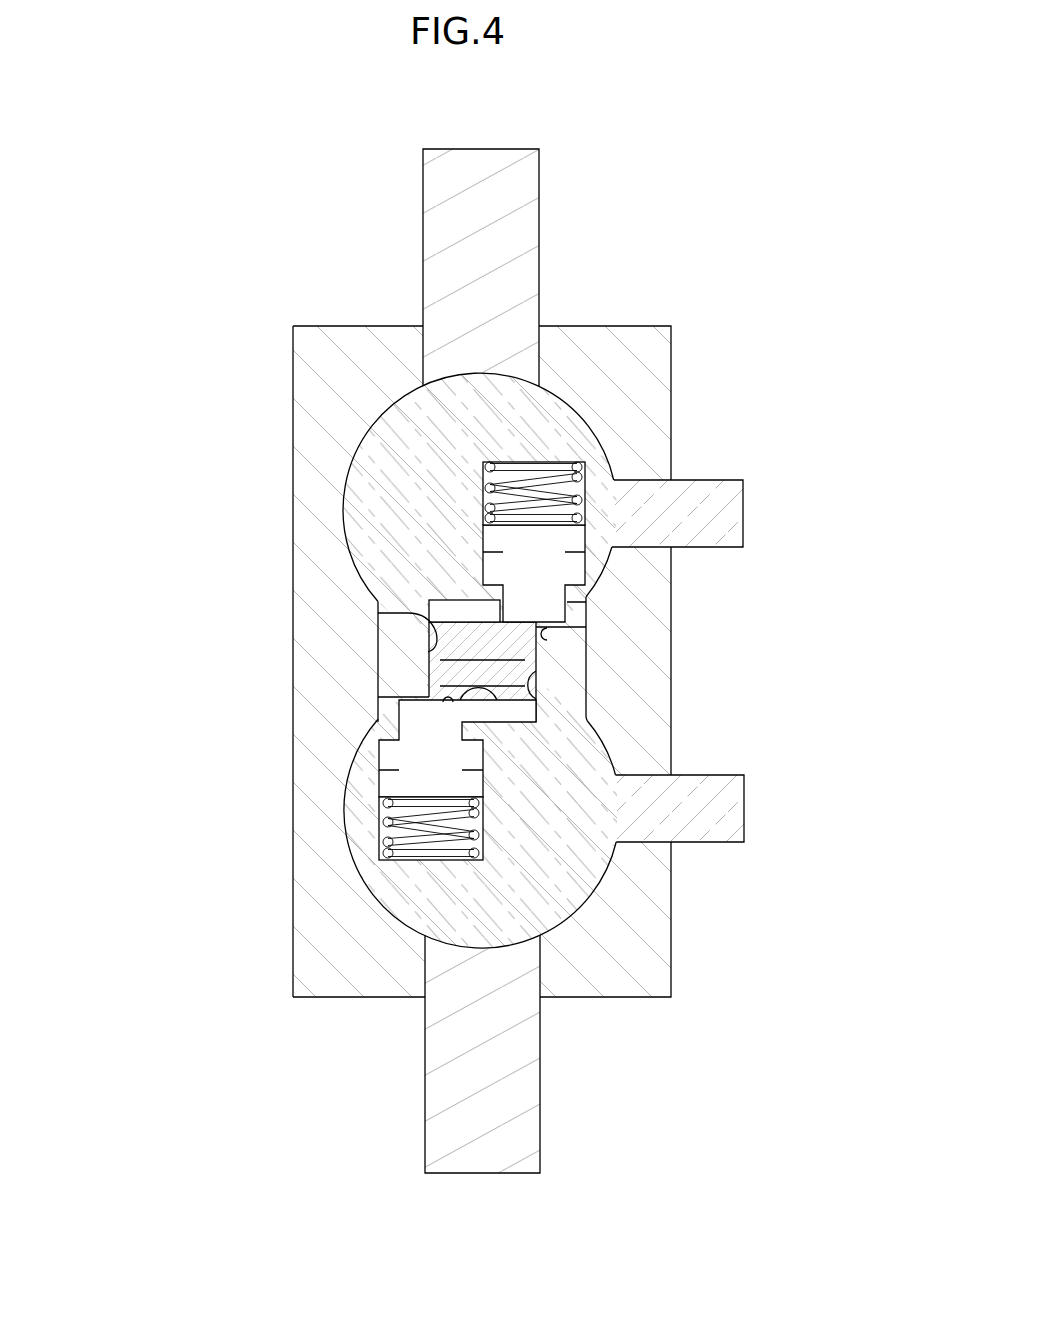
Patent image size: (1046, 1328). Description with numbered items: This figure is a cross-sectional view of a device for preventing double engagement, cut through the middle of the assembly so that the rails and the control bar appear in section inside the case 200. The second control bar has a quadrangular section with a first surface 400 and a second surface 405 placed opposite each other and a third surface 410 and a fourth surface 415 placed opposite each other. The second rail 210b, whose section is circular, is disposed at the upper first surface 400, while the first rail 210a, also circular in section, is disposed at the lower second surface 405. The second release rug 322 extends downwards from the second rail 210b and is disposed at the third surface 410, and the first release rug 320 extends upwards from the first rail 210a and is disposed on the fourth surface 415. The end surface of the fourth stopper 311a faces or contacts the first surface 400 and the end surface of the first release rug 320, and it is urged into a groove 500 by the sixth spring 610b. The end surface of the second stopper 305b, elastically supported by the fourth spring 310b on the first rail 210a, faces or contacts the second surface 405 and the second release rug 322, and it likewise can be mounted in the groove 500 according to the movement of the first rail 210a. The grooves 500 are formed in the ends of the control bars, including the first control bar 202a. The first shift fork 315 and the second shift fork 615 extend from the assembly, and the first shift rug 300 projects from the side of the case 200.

The case 200 is at (620, 343).
The first control bar 202a is at (465, 673).
The first rail 210a is at (400, 432).
The second rail 210b is at (360, 837).
The first shift rug 300 is at (730, 808).
The second stopper 305b is at (428, 752).
The fourth spring 310b is at (393, 850).
The fourth stopper 311a is at (535, 562).
The first shift fork 315 is at (515, 1110).
The first release rug 320 is at (568, 658).
The second release rug 322 is at (400, 670).
The first surface 400 is at (493, 613).
The second surface 405 is at (460, 700).
The third surface 410 is at (378, 613).
The fourth surface 415 is at (518, 677).
The grooves 500 is at (547, 637).
The sixth spring 610b is at (577, 478).
The second shift fork 615 is at (427, 195).